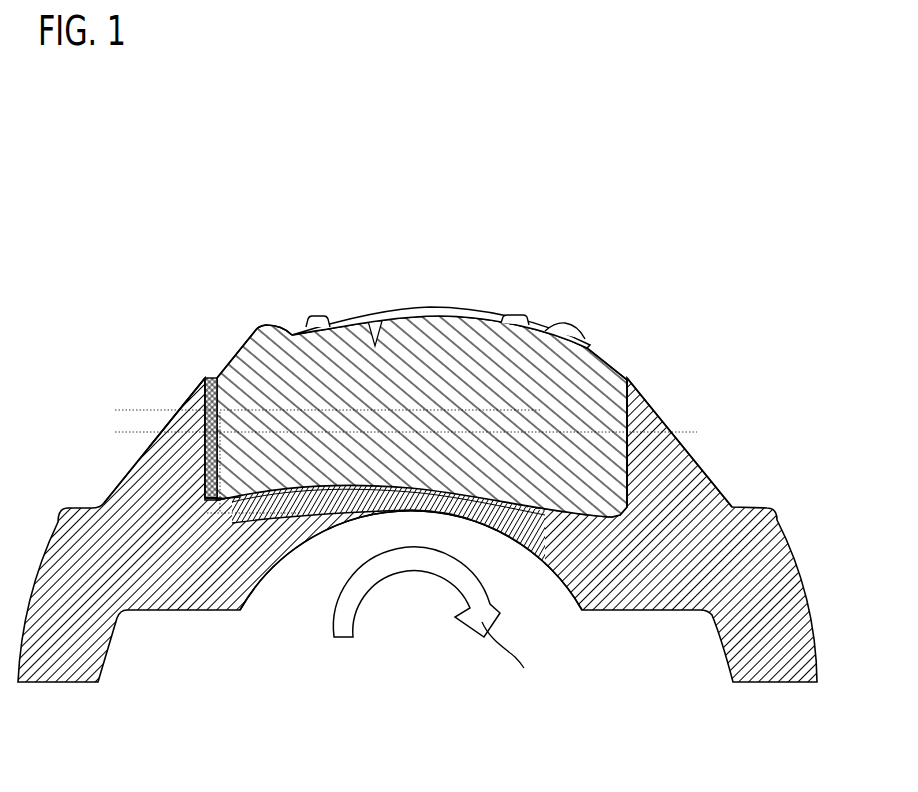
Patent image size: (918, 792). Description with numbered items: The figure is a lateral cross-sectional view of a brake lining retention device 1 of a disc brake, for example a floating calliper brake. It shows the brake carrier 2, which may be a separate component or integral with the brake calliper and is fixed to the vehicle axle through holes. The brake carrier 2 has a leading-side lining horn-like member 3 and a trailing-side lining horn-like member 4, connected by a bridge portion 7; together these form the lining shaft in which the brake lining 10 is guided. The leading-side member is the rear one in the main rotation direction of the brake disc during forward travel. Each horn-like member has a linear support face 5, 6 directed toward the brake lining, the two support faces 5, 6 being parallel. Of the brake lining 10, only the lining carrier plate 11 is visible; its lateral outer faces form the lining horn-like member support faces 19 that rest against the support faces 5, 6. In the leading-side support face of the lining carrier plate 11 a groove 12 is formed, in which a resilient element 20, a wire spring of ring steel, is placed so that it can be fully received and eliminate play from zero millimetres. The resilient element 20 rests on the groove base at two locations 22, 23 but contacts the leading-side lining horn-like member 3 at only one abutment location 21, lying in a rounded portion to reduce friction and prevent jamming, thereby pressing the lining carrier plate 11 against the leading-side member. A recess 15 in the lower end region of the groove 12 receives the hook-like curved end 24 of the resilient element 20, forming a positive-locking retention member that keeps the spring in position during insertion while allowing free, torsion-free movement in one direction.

The disc brake 1 is at (428, 66).
The brake carrier 2 is at (183, 570).
The leading-side lining horn-like member 3 is at (184, 405).
The trailing-side lining horn-like member 4 is at (643, 452).
The support face 5 is at (208, 498).
The support face 6 is at (621, 417).
The bridge portion 7 is at (510, 534).
The brake lining 10 is at (359, 400).
The lining carrier plate 11 is at (427, 339).
The groove 12 is at (204, 456).
The recess 15 is at (216, 499).
The lining horn-like member support face 19 is at (633, 396).
The resilient element 20 is at (208, 376).
The abutment location 21 is at (193, 442).
The support location 22 is at (215, 388).
The support location 23 is at (212, 498).
The end of the resilient element 24 is at (206, 496).